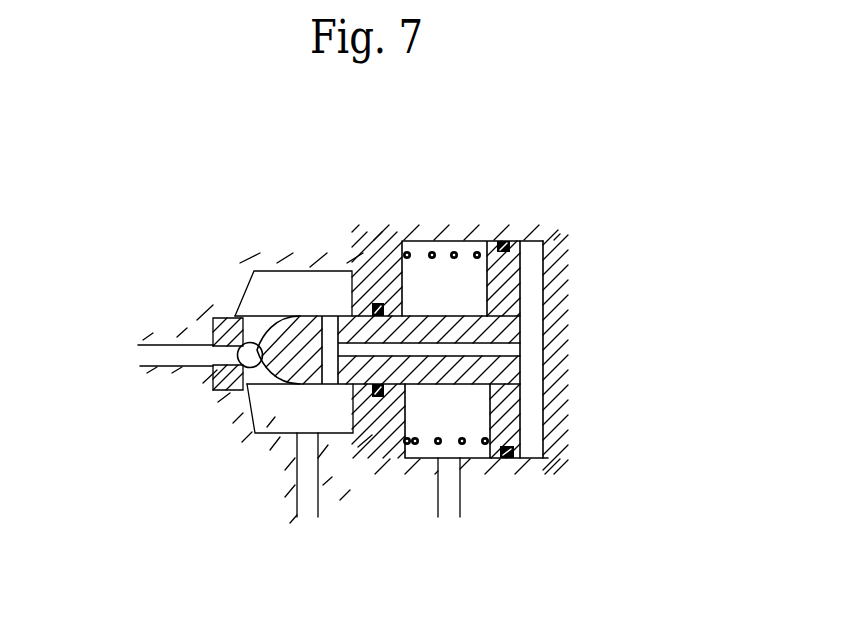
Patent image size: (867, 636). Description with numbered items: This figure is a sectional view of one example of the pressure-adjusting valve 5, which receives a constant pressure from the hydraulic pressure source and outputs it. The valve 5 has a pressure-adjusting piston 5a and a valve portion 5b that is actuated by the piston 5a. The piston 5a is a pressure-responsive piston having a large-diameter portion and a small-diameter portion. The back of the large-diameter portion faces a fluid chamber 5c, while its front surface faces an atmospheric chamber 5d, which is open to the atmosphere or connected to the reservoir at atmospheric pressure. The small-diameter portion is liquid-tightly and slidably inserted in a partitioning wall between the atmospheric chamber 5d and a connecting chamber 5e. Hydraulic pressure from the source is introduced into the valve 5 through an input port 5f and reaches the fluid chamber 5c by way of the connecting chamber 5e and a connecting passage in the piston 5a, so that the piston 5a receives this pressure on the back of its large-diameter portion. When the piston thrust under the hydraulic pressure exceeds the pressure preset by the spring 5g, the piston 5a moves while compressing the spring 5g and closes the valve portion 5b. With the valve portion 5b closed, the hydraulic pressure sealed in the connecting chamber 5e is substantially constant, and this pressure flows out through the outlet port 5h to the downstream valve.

The pressure-adjusting valve 5 is at (423, 200).
The pressure-adjusting piston 5a is at (505, 320).
The valve portion 5b is at (251, 372).
The fluid chamber 5c is at (533, 250).
The atmospheric chamber 5d is at (468, 423).
The connecting chamber 5e is at (277, 418).
The input port 5f is at (156, 338).
The spring 5g is at (407, 443).
The outlet port 5h is at (307, 500).